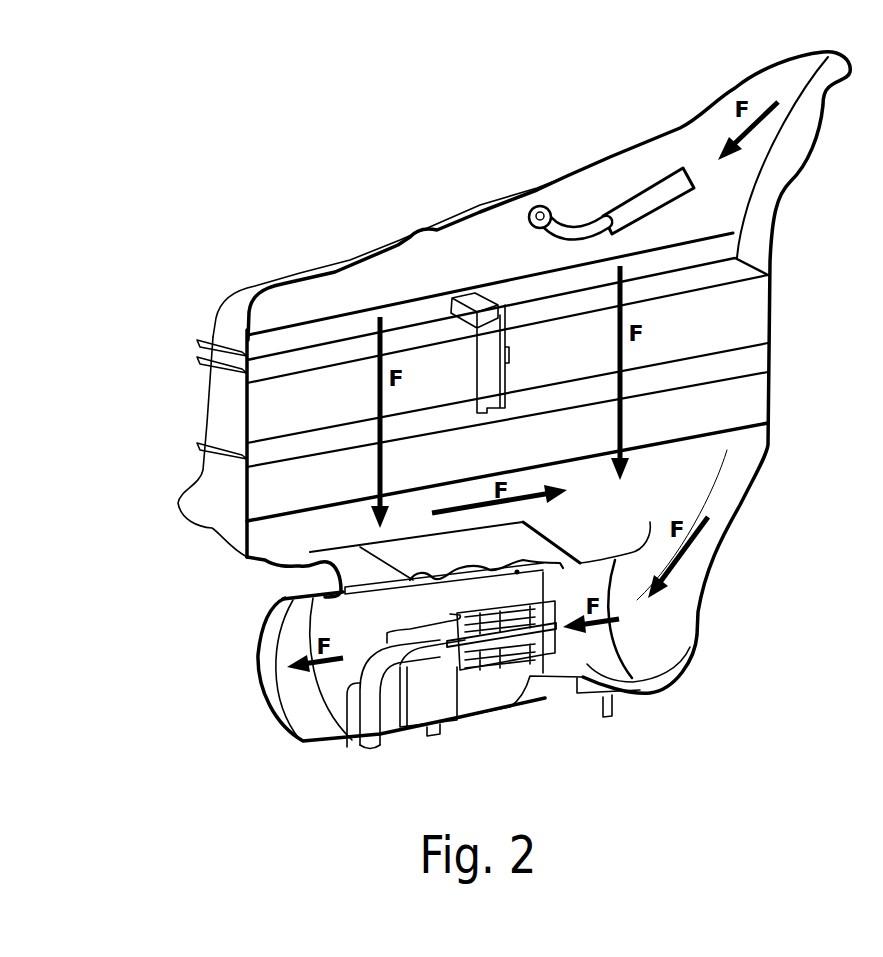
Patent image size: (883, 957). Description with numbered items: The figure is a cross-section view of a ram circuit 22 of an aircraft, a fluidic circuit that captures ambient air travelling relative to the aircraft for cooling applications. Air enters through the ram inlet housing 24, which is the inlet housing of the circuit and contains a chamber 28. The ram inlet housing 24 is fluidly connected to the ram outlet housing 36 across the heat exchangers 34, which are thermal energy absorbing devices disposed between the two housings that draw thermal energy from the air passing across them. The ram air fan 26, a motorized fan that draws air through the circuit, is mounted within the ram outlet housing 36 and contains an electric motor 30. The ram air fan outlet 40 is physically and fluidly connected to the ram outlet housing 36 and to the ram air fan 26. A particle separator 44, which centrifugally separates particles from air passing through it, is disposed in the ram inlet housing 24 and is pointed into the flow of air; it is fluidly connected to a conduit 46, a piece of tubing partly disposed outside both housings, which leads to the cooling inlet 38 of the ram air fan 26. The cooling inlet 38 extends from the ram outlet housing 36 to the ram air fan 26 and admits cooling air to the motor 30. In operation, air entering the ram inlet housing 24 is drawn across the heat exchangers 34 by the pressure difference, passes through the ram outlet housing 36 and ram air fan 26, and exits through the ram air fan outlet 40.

The ram circuit 22 is at (346, 179).
The ram inlet housing 24 is at (280, 288).
The ram air fan 26 is at (457, 675).
The chamber 28 is at (718, 250).
The motor 30 is at (507, 643).
The heat exchangers 34 is at (280, 408).
The ram outlet housing 36 is at (727, 527).
The cooling inlet 38 is at (357, 735).
The ram air fan outlet 40 is at (293, 618).
The particle separator 44 is at (646, 189).
The conduit 46 is at (572, 220).